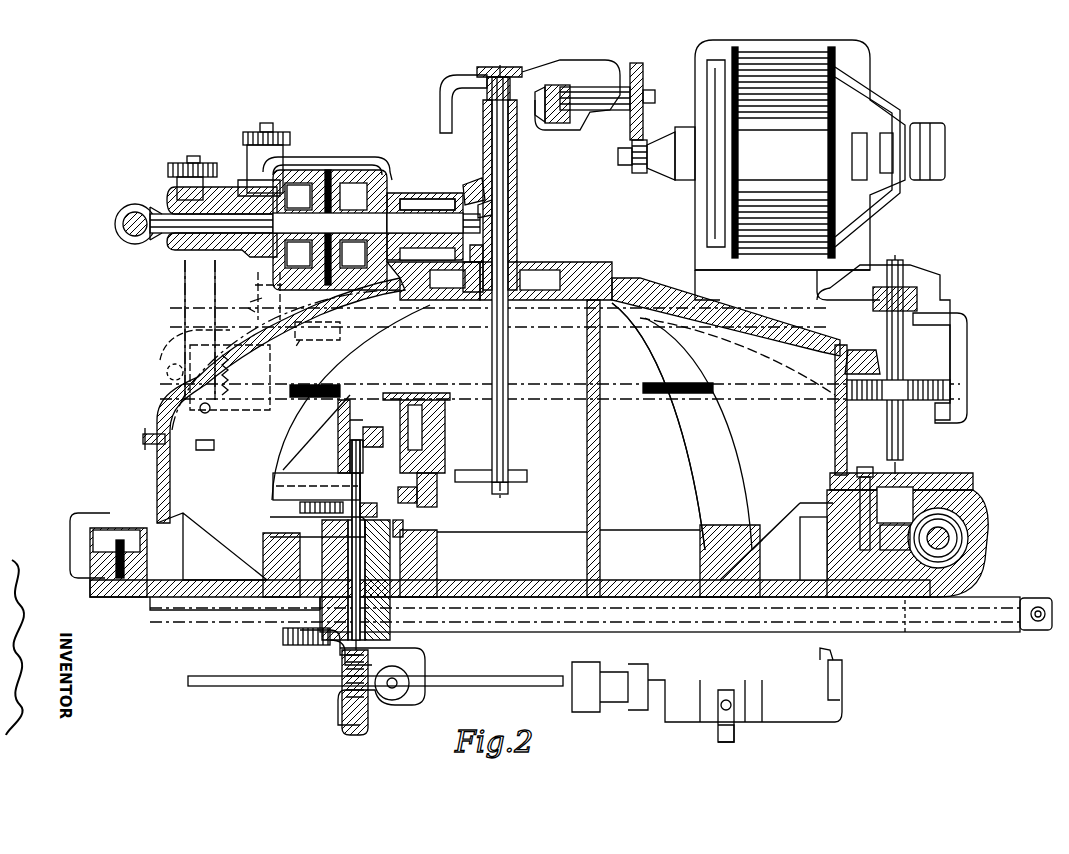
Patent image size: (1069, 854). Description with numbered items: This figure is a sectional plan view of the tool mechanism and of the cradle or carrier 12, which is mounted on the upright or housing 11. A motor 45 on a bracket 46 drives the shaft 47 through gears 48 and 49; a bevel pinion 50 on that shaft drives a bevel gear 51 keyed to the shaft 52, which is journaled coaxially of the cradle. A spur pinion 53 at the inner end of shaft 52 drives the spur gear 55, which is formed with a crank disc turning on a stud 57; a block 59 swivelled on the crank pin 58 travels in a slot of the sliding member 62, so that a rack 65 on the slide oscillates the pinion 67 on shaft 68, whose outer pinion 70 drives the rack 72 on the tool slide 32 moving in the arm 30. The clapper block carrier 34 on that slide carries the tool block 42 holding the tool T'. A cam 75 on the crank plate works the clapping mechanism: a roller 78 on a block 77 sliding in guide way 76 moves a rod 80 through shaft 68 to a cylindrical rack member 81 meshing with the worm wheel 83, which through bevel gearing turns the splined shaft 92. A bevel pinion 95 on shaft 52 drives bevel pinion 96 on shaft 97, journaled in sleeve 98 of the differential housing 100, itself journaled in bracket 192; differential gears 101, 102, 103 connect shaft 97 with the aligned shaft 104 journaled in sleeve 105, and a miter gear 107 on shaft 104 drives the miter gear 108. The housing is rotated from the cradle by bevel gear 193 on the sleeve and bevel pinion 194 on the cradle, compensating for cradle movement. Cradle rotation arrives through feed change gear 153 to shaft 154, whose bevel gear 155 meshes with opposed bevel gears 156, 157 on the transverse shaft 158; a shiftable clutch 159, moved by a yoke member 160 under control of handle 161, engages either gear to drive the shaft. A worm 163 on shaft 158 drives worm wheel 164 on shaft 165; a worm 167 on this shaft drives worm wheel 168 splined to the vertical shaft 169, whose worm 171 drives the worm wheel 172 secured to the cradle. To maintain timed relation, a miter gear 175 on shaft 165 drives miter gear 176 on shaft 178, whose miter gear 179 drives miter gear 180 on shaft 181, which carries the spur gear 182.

The upright or housing 11 is at (157, 462).
The cradle or carrier 12 is at (684, 469).
The arm 30 is at (965, 600).
The tool slide 32 is at (908, 632).
The clapper block carrier 34 is at (808, 686).
The tool block 42 is at (744, 722).
The tool T' is at (735, 742).
The motor 45 is at (875, 90).
The bracket 46 is at (867, 243).
The shaft 47 is at (608, 87).
The gear 48 is at (636, 173).
The gear 49 is at (642, 68).
The bevel pinion 50 is at (522, 68).
The bevel gear 51 is at (558, 123).
The shaft 52 is at (512, 200).
The spur pinion 53 is at (510, 483).
The spur gear 55 is at (468, 483).
The stud 57 is at (434, 488).
The crank pin 58 is at (412, 503).
The block 59 is at (401, 522).
The sliding member 62 is at (275, 500).
The rack 65 is at (300, 508).
The pinion 67 is at (374, 511).
The shaft 68 is at (390, 585).
The pinion 70 is at (335, 652).
The rack 72 is at (283, 638).
The cam 75 is at (388, 395).
The guide way 76 is at (340, 430).
The slidable block 77 is at (348, 458).
The roller 78 is at (385, 445).
The rod 80 is at (350, 660).
The cylindrical rack member 81 is at (344, 705).
The worm wheel 83 is at (400, 700).
The splined shaft 92 is at (240, 686).
The bevel pinion 95 is at (512, 250).
The bevel pinion 96 is at (500, 208).
The shaft 97 is at (428, 199).
The sleeve 98 is at (410, 199).
The differential housing 100 is at (352, 176).
The bevel gear 101 is at (353, 256).
The differential gear 102 is at (296, 196).
The differential gear 103 is at (298, 256).
The shaft 104 is at (243, 197).
The sleeve 105 is at (250, 180).
The miter gear 107 is at (158, 212).
The miter gear 108 is at (130, 245).
The spur gear 153 is at (172, 166).
The shaft 154 is at (185, 293).
The bevel gear 155 is at (172, 355).
The bevel gear 156 is at (166, 373).
The bevel gear 157 is at (251, 412).
The transverse shaft 158 is at (321, 384).
The shiftable clutch 159 is at (218, 388).
The yoke member 160 is at (210, 450).
The handle 161 is at (143, 439).
The worm 163 is at (935, 412).
The worm wheel 164 is at (950, 380).
The shaft 165 is at (905, 340).
The worm 167 is at (876, 508).
The worm wheel 168 is at (912, 520).
The vertical shaft 169 is at (962, 539).
The worm 171 is at (968, 517).
The worm wheel 172 is at (93, 541).
The miter gear 175 is at (917, 292).
The miter gear 176 is at (868, 335).
The shaft 178 is at (691, 319).
The miter gear 179 is at (298, 342).
The miter gear 180 is at (250, 303).
The shaft 181 is at (258, 279).
The spur gear 182 is at (288, 130).
The bracket 192 is at (345, 157).
The bevel gear 193 is at (464, 185).
The bevel pinion 194 is at (512, 270).